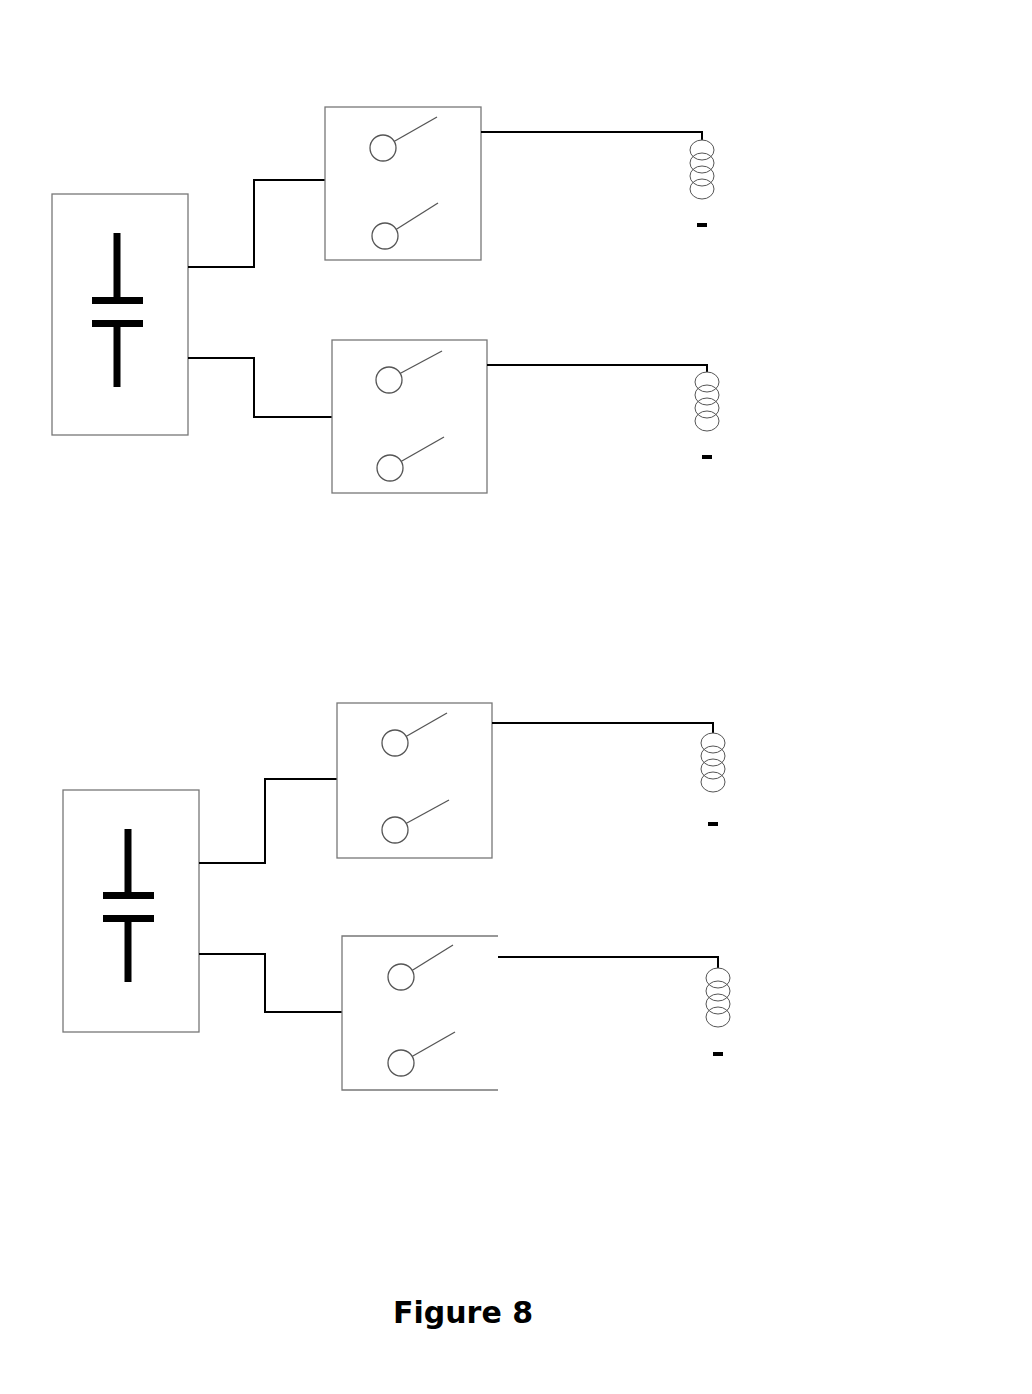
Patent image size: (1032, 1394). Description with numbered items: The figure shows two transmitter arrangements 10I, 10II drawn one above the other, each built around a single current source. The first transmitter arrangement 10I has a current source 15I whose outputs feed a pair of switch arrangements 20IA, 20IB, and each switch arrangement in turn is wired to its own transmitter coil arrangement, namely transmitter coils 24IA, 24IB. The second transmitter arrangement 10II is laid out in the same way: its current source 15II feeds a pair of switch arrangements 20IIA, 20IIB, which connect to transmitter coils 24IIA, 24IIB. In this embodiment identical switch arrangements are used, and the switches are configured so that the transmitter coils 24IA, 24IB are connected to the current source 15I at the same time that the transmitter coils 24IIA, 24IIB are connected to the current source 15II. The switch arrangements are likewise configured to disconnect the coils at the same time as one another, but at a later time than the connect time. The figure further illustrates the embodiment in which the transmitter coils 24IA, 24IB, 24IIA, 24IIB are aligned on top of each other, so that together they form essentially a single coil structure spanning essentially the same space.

The transmitter arrangement 10I is at (214, 118).
The current source 15I is at (119, 435).
The switch arrangement 20IA is at (503, 116).
The switch arrangement 20IB is at (511, 437).
The transmitter coil arrangement 24IA is at (730, 153).
The transmitter coil arrangement 24IB is at (732, 397).
The transmitter arrangement 10II is at (221, 708).
The current source 15II is at (125, 1026).
The switch arrangement 20IIA is at (507, 706).
The switch arrangement 20IIB is at (516, 1026).
The transmitter coil arrangement 24IIA is at (737, 745).
The transmitter coil arrangement 24IIB is at (737, 987).